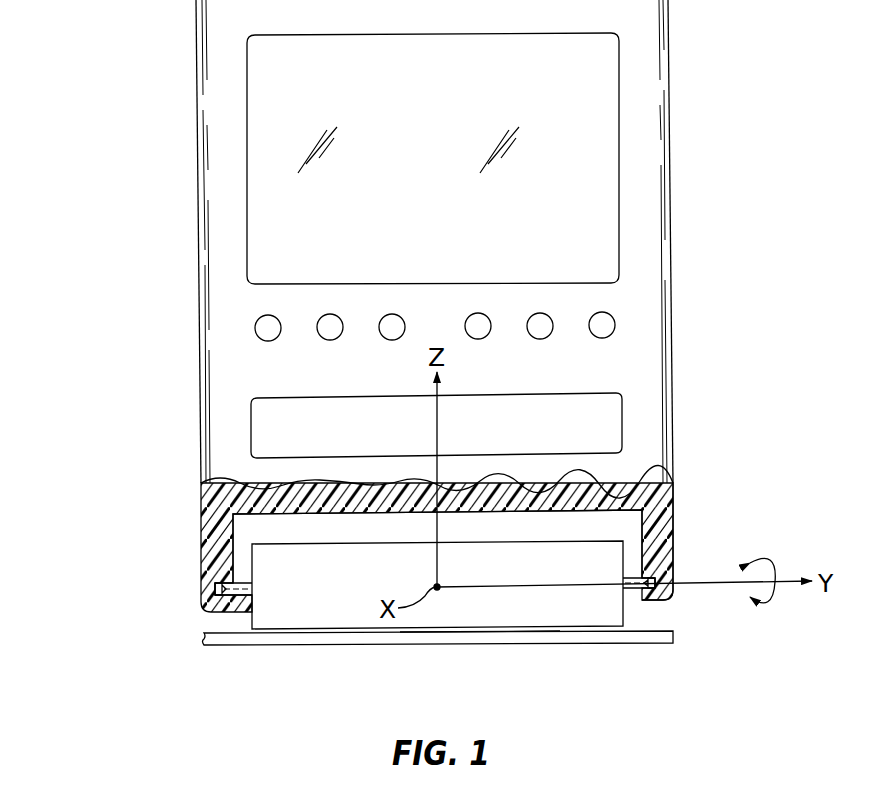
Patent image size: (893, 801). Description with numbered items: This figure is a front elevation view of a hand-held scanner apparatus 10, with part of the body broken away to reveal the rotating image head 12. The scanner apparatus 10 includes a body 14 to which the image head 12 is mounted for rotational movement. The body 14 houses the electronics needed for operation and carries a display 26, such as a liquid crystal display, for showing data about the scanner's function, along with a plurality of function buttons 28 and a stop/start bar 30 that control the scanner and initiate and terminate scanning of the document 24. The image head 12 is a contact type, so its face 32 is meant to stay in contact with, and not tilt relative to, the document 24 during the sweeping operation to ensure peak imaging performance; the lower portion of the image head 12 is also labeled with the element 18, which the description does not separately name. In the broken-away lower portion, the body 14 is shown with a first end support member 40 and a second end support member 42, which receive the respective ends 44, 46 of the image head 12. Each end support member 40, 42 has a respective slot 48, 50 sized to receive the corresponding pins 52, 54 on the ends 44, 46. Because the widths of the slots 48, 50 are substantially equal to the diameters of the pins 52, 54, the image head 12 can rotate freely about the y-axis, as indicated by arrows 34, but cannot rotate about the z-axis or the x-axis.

The hand-held scanner apparatus 10 is at (352, 241).
The rotating image head 12 is at (435, 588).
The body 14 is at (196, 205).
The module body 18 is at (623, 612).
The document 24 is at (226, 647).
The display 26 is at (620, 155).
The function buttons 28 is at (392, 314).
The stop/start bar 30 is at (622, 420).
The face 32 is at (524, 631).
The arrows 34 is at (772, 560).
The first end support member 40 is at (201, 499).
The second end support member 42 is at (673, 495).
The end 44 is at (233, 550).
The end 46 is at (643, 519).
The slot 48 is at (230, 577).
The slot 50 is at (650, 550).
The pin 52 is at (213, 589).
The pin 54 is at (655, 580).